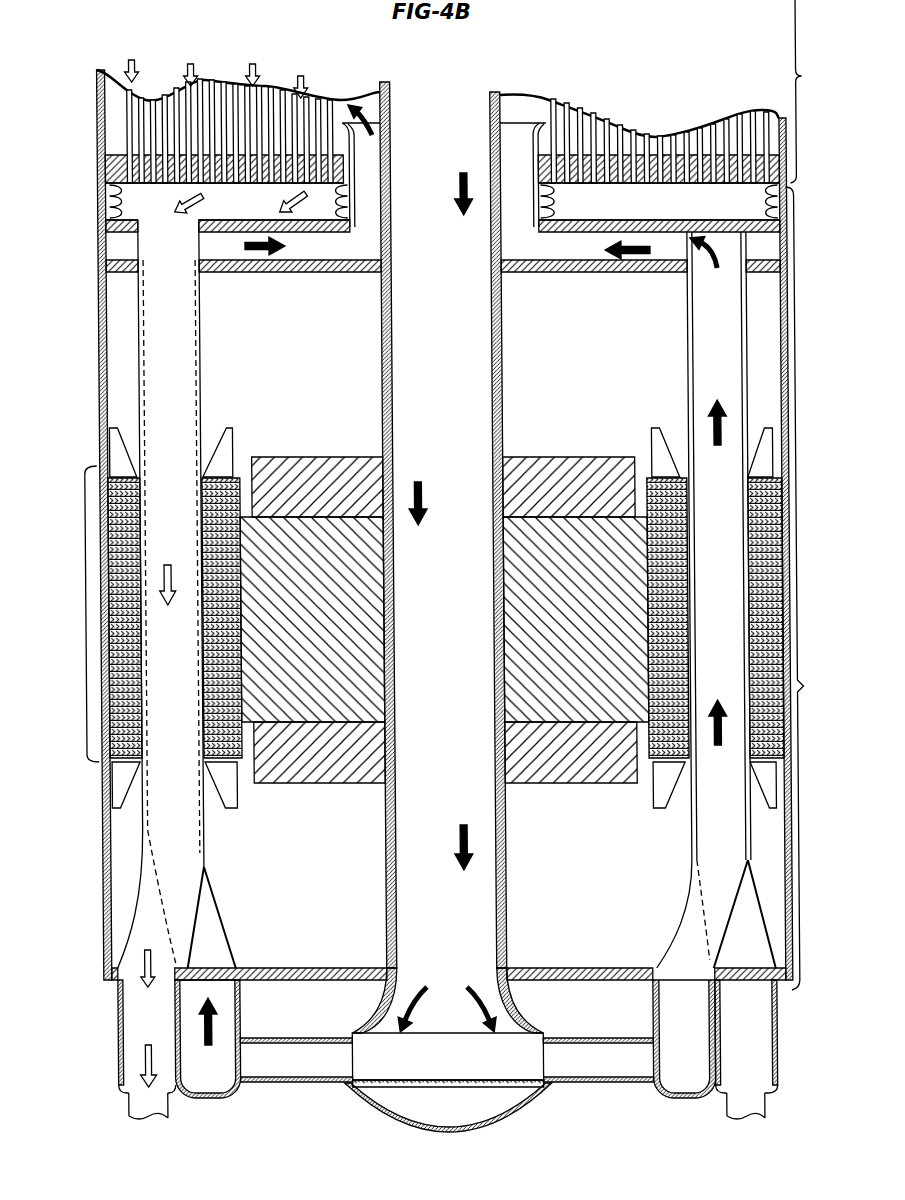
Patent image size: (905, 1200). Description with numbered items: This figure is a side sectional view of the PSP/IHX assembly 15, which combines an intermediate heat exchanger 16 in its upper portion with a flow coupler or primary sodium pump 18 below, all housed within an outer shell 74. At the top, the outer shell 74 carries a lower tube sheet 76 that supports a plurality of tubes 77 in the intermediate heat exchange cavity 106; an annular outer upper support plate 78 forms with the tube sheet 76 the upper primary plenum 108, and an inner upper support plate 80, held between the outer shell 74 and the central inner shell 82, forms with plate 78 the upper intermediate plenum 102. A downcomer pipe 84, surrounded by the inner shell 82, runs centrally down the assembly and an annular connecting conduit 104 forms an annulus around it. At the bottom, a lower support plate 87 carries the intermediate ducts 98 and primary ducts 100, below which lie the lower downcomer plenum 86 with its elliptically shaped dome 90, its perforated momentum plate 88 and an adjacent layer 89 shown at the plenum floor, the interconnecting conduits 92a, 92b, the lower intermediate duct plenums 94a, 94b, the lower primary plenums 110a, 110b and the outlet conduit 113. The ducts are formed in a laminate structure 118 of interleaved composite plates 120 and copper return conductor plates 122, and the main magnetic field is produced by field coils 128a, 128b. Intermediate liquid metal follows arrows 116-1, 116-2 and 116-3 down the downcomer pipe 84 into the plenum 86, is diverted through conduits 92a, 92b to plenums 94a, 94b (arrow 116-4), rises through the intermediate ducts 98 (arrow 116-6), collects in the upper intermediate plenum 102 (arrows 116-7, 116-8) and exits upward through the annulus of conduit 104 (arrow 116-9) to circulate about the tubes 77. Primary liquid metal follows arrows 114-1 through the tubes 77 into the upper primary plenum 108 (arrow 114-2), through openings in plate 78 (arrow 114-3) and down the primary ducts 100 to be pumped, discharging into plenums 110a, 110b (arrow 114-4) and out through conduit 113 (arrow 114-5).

The PSP/IHX assembly 15 is at (620, 84).
The intermediate heat exchanger 16 is at (812, 91).
The flow coupler or primary sodium pump 18 is at (811, 588).
The outer shell 74 is at (98, 338).
The lower tube sheet 76 is at (262, 184).
The tubes 77 is at (658, 137).
The outer upper support plate 78 is at (578, 222).
The inner upper support plate 80 is at (562, 268).
The inner shell 82 is at (505, 364).
The downcomer pipe 84 is at (393, 420).
The lower downcomer plenum 86 is at (458, 1062).
The lower support plate 87 is at (542, 968).
The hydrostatically balanced momentum plate 88 is at (364, 1085).
The wick 89 is at (411, 1087).
The elliptically shaped dome 90 is at (483, 1120).
The interconnecting conduit 92a is at (302, 1080).
The interconnecting conduit 92b is at (613, 1080).
The lower intermediate duct plenum 94a is at (234, 996).
The lower intermediate duct plenum 94b is at (645, 1001).
The intermediate duct 98 is at (212, 928).
The primary duct 100 is at (198, 838).
The upper intermediate plenum 102 is at (552, 257).
The annular connecting conduit 104 is at (356, 205).
The intermediate heat exchange cavity 106 is at (108, 72).
The upper primary plenum 108 is at (688, 212).
The lower primary plenum 110a is at (110, 1041).
The lower primary plenum 110b is at (765, 1030).
The outlet conduit 113 is at (162, 1118).
The arrow 114-1 is at (258, 82).
The arrow 114-2 is at (302, 214).
The arrow 114-3 is at (177, 397).
The arrow 114-4 is at (124, 983).
The arrow 114-5 is at (135, 1058).
The arrow 116-1 is at (456, 150).
The arrow 116-2 is at (450, 478).
The arrow 116-3 is at (405, 992).
The arrow 116-4 is at (208, 1023).
The arrow 116-6 is at (700, 422).
The arrow 116-7 is at (700, 280).
The arrow 116-8 is at (622, 264).
The arrow 116-9 is at (356, 105).
The laminate structure 118 is at (101, 600).
The composite plate 120 is at (242, 678).
The return conductor plate 122 is at (247, 632).
The field coil 128a is at (296, 457).
The field coil 128b is at (543, 457).